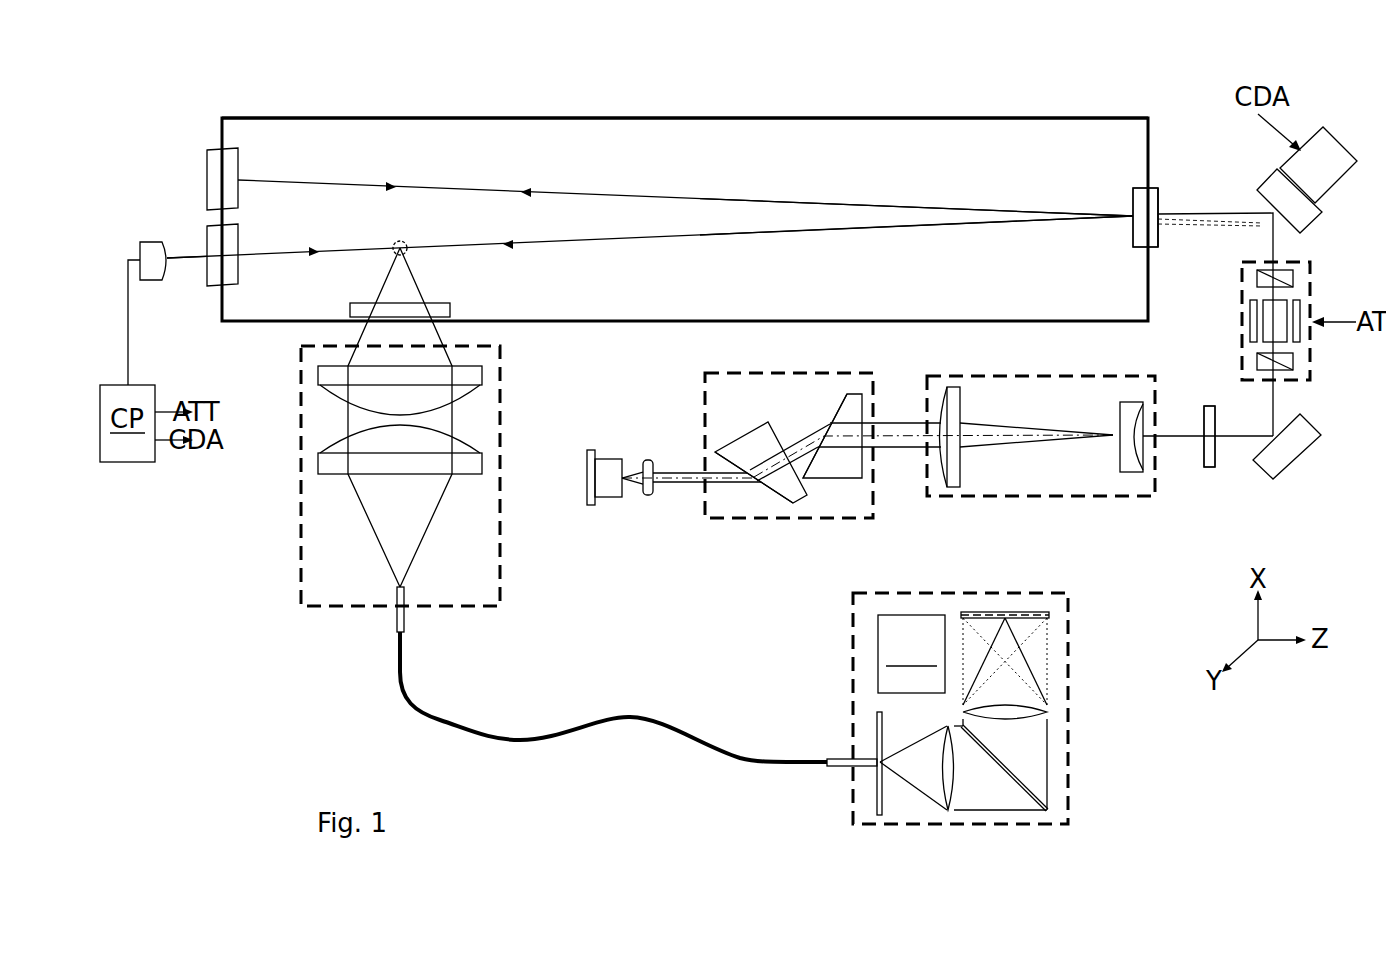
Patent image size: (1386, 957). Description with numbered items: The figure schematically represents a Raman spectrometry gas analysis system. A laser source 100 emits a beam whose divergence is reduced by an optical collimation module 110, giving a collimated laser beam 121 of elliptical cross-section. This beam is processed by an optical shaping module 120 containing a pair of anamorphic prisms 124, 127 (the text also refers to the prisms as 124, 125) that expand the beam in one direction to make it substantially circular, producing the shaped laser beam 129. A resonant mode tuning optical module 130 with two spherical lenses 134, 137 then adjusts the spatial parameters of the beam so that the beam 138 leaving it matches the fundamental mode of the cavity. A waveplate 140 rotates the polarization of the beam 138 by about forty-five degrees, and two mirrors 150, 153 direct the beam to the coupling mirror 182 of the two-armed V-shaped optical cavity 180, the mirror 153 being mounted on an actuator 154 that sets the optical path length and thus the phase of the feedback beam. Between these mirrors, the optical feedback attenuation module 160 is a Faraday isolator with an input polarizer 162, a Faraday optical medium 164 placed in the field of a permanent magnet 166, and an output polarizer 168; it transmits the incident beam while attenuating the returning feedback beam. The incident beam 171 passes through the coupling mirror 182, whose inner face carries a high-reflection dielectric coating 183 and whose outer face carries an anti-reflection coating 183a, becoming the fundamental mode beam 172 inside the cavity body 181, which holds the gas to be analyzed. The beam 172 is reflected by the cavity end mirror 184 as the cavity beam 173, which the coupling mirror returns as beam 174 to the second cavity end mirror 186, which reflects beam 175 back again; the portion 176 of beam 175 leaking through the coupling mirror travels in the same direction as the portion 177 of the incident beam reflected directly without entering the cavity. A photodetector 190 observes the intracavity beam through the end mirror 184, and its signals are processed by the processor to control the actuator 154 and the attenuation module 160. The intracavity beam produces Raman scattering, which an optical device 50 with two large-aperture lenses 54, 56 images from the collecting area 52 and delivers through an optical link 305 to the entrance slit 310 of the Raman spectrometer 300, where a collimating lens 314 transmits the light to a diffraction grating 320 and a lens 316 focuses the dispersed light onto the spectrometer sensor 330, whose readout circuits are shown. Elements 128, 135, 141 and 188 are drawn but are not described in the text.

The optical device 50 is at (432, 440).
The collecting area 52 is at (408, 252).
The lens 54 is at (482, 375).
The lens 56 is at (470, 464).
The laser source 100 is at (610, 505).
The optical collimation module 110 is at (650, 497).
The optical shaping module 120 is at (869, 451).
The collimated laser beam 121 is at (675, 470).
The anamorphic prism 124 is at (796, 497).
The anamorphic prism 125 is at (775, 470).
The anamorphic prism 127 is at (855, 478).
The prism exit surface 128 is at (835, 425).
The shaped laser beam 129 is at (885, 450).
The resonant mode tuning optical module 130 is at (1040, 449).
The spherical lens 134 is at (953, 487).
The focused beam 135 is at (990, 430).
The spherical lens 137 is at (1135, 472).
The beam exiting optical module 130 138 is at (1165, 438).
The waveplate 140 is at (1208, 406).
The attenuator plate 141 is at (1215, 440).
The mirror 150 is at (1290, 464).
The mirror 153 is at (1305, 212).
The actuator 154 is at (1318, 150).
The optical feedback attenuation module 160 is at (1309, 331).
The input polarizer 162 is at (1295, 362).
The Faraday optical medium 164 is at (1285, 322).
The permanent magnet 166 is at (1300, 306).
The output polarizer 168 is at (1295, 277).
The incident beam 171 is at (1216, 213).
The fundamental mode beam 172 is at (508, 247).
The cavity beam 173 is at (317, 255).
The beam reflected from coupling mirror 174 is at (527, 190).
The beam reflected by mirror 186 175 is at (392, 185).
The beam portion 176 is at (1225, 226).
The beam portion 177 is at (190, 257).
The optical cavity 180 is at (706, 128).
The cavity body 181 is at (486, 117).
The coupling mirror 182 is at (1155, 190).
The dielectric coating 183 is at (1137, 247).
The anti-reflection coating 183a is at (1160, 247).
The cavity end mirror 184 is at (212, 286).
The cavity end mirror 186 is at (212, 160).
The window plate 188 is at (350, 313).
The photodetector 190 is at (162, 280).
The Raman spectrometer 300 is at (964, 708).
The optical link 305 is at (640, 717).
The entrance slit 310 is at (870, 752).
The collimating lens 314 is at (950, 812).
The lens 316 is at (1050, 712).
The diffraction grating 320 is at (1047, 800).
The spectrometer sensor 330 is at (978, 612).